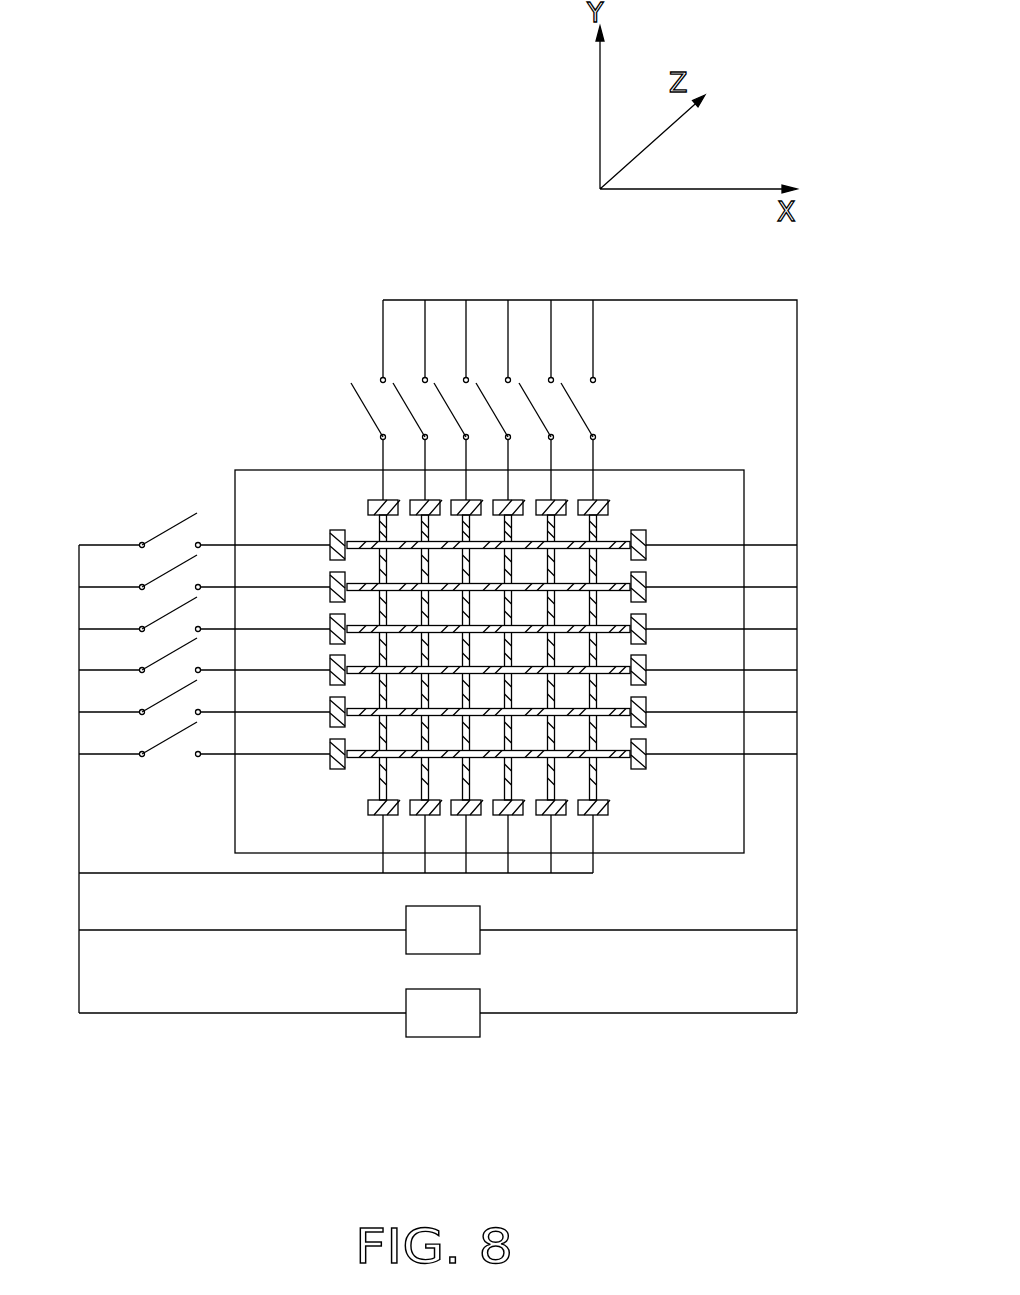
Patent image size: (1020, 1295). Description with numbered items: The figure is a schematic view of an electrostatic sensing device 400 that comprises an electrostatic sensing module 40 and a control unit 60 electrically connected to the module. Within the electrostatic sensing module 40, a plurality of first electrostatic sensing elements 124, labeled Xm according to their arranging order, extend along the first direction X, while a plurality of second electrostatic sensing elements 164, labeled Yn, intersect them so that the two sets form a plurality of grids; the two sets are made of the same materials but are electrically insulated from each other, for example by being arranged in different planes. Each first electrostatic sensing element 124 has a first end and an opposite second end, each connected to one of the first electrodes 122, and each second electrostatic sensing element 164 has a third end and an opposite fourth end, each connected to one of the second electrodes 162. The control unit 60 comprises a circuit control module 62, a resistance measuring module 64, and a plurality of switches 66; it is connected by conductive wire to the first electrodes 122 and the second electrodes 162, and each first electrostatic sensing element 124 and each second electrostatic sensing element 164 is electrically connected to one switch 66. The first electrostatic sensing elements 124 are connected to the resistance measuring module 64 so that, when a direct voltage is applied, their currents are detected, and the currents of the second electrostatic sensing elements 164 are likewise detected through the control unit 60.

The electrostatic sensing device 400 is at (268, 91).
The electrostatic sensing module 40 is at (231, 298).
The second electrodes 162 is at (372, 515).
The second electrostatic sensing elements 164 is at (379, 523).
The first electrostatic sensing elements 124 is at (362, 545).
The first electrodes 122 is at (340, 532).
The switches 66 is at (168, 527).
The control unit 60 is at (583, 1133).
The circuit control module 62 is at (467, 917).
The resistance measuring module 64 is at (438, 1027).